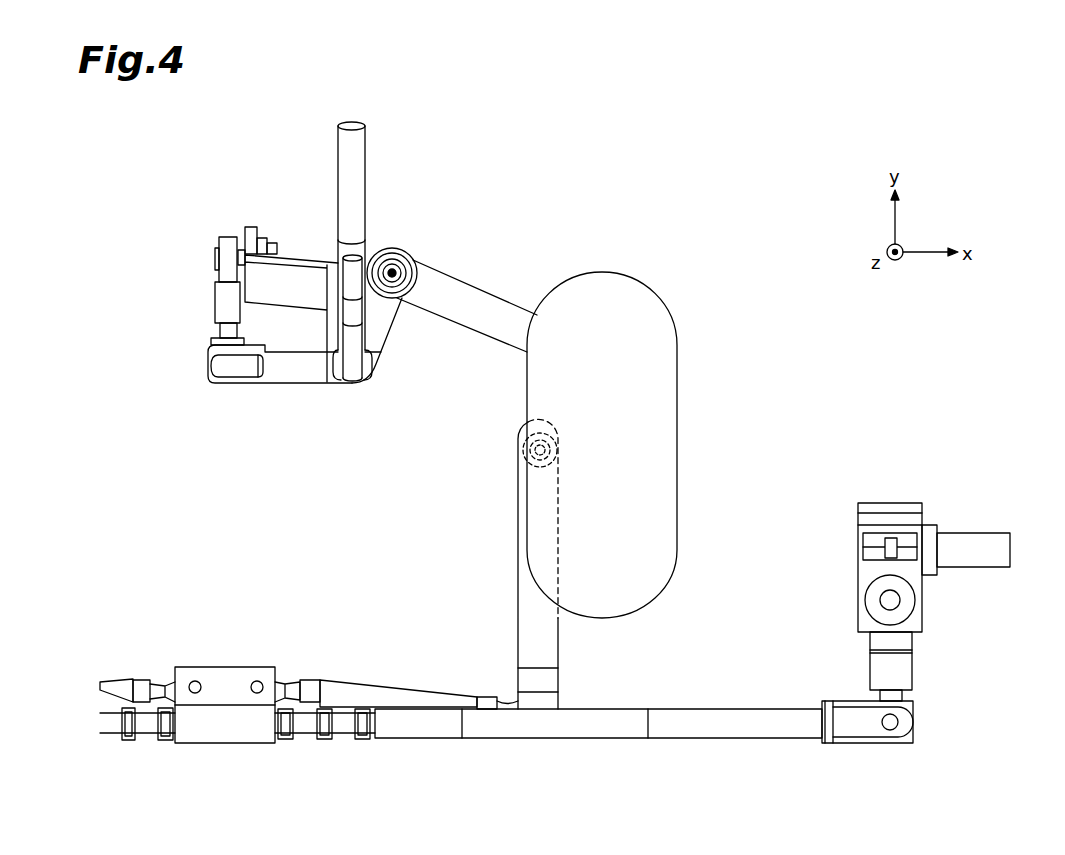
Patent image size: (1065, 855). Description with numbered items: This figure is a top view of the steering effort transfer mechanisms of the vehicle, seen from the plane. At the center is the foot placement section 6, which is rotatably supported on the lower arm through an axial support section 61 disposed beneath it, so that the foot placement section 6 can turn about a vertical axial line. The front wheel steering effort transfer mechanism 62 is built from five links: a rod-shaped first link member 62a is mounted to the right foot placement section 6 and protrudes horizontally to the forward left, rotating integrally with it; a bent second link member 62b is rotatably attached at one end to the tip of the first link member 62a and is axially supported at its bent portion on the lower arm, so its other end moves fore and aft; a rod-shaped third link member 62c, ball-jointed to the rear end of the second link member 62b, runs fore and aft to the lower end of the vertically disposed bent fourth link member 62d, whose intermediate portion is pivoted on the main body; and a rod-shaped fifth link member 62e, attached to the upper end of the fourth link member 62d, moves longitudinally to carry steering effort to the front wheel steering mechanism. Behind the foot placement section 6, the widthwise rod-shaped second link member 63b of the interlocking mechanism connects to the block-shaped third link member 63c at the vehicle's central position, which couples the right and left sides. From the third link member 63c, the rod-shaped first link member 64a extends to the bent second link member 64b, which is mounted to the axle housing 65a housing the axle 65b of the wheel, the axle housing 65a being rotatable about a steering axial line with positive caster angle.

The foot placement section 6 is at (622, 277).
The axial support section 61 is at (526, 452).
The front wheel steering effort transfer mechanism 62 is at (526, 170).
The first link member 62a is at (500, 298).
The second link member 62b is at (389, 334).
The third link member 62c is at (215, 288).
The fourth link member 62d is at (292, 256).
The fifth link member 62e is at (367, 170).
The second link member 63b is at (352, 677).
The third link member 63c is at (235, 745).
The first link member 64a is at (696, 740).
The second link member 64b is at (913, 667).
The axle housing 65a is at (858, 515).
The axle 65b is at (993, 533).